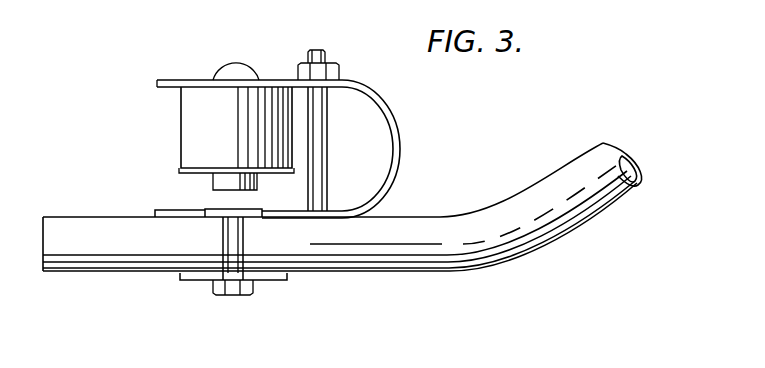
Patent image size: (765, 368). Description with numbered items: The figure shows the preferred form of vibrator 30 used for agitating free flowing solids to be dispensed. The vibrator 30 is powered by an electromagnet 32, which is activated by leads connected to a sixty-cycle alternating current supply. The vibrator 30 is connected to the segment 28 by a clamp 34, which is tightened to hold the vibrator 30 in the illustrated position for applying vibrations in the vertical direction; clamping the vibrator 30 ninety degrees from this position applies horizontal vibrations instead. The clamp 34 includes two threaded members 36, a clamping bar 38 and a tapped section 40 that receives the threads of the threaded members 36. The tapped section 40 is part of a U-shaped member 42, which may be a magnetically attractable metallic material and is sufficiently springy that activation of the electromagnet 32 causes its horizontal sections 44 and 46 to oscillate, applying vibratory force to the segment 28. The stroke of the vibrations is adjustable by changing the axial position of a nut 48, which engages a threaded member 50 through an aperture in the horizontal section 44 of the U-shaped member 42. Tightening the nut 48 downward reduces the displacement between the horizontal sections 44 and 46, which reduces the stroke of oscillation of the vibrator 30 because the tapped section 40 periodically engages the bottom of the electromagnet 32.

The segment 28 is at (82, 222).
The vibrator 30 is at (195, 70).
The electromagnet 32 is at (180, 138).
The clamp 34 is at (194, 292).
The threaded members 36 is at (230, 296).
The clamping bar 38 is at (278, 281).
The tapped section 40 is at (218, 210).
The U-shaped member 42 is at (405, 139).
The horizontal section 44 is at (285, 86).
The horizontal section 46 is at (157, 210).
The nut 48 is at (333, 73).
The threaded member 50 is at (322, 123).